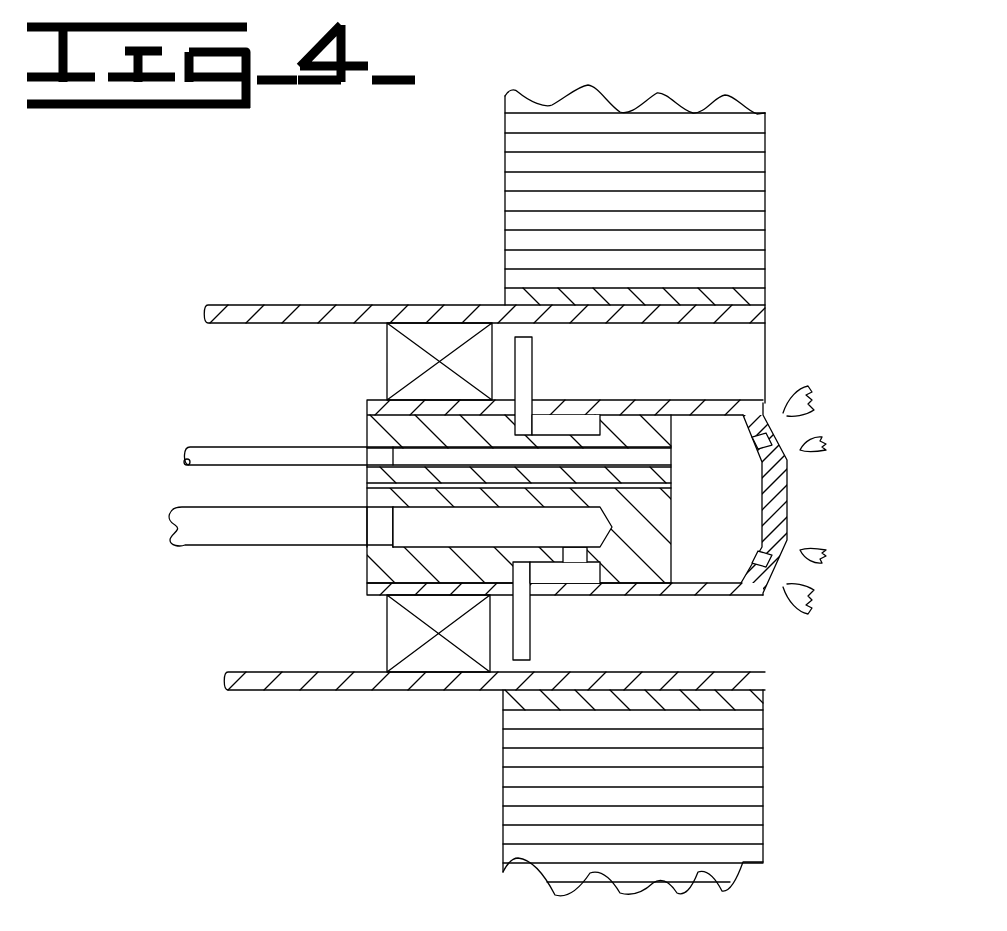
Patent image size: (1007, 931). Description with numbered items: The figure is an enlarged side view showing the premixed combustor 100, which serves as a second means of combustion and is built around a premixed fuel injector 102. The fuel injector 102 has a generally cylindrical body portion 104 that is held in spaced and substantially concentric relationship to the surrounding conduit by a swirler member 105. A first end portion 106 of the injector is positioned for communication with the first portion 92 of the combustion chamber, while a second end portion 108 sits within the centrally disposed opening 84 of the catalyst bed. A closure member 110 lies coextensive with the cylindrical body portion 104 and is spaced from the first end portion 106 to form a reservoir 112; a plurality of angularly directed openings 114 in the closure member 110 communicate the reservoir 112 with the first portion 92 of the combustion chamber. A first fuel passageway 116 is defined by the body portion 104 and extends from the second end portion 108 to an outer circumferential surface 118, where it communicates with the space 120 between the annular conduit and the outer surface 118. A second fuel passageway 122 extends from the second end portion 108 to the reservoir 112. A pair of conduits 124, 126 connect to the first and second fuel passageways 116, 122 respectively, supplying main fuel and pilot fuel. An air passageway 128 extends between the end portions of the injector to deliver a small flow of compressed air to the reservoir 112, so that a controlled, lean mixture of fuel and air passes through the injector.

The centrally disposed opening 84 is at (763, 333).
The first portion of the combustion chamber 92 is at (905, 807).
The premixed combustor 100 is at (862, 247).
The premixed fuel injector 102 is at (362, 407).
The cylindrical body portion 104 is at (385, 565).
The swirler member 105 is at (438, 348).
The first end portion 106 is at (670, 541).
The second end portion 108 is at (384, 530).
The closure member 110 is at (787, 507).
The reservoir 112 is at (742, 508).
The angularly directed openings 114 is at (770, 442).
The first fuel passageway 116 is at (498, 540).
The outer circumferential surface 118 is at (650, 401).
The space 120 is at (752, 380).
The second fuel passageway 122 is at (565, 455).
The conduit 124 is at (212, 533).
The conduit 126 is at (205, 457).
The air passageway 128 is at (317, 465).